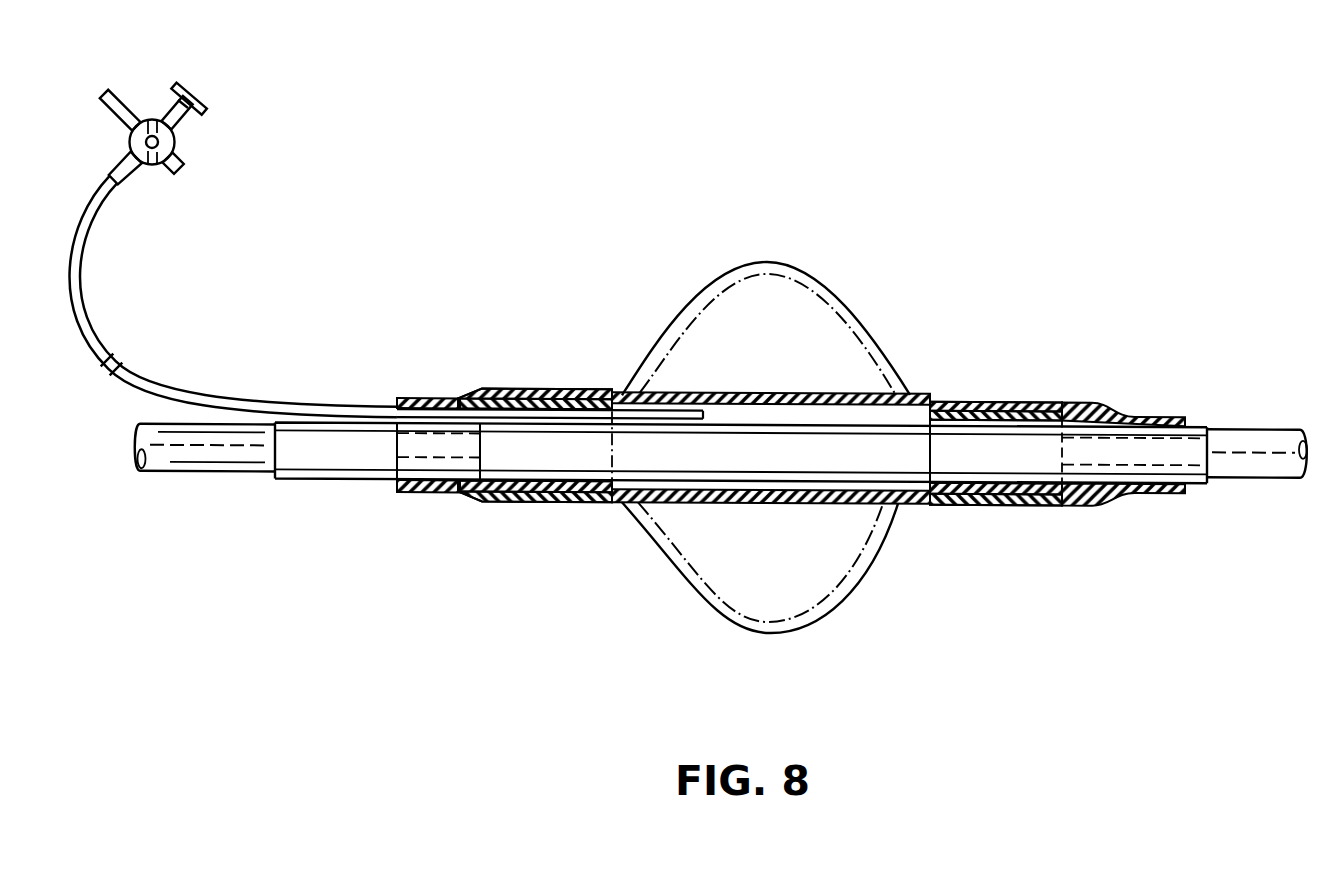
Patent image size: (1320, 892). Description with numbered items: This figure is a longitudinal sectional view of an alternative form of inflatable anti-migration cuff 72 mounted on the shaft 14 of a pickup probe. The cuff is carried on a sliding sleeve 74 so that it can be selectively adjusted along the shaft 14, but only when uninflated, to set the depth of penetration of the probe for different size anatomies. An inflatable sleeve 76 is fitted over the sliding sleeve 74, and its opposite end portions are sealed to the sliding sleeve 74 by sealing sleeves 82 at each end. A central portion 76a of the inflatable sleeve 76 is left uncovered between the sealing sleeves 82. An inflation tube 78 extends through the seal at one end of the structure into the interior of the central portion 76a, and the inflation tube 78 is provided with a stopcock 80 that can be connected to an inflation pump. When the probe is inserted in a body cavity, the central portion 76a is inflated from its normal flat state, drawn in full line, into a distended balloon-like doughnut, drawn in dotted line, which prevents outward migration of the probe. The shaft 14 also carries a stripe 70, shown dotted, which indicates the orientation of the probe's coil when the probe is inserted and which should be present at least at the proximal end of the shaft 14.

The shaft 14 is at (247, 482).
The stripe 70 is at (1268, 453).
The inflatable anti-migration cuff 72 is at (570, 377).
The sliding sleeve 74 is at (363, 452).
The inflatable sleeve 76 is at (970, 487).
The central portion 76a is at (743, 265).
The inflation tube 78 is at (667, 417).
The stopcock 80 is at (170, 117).
The sealing sleeves 82 is at (463, 398).